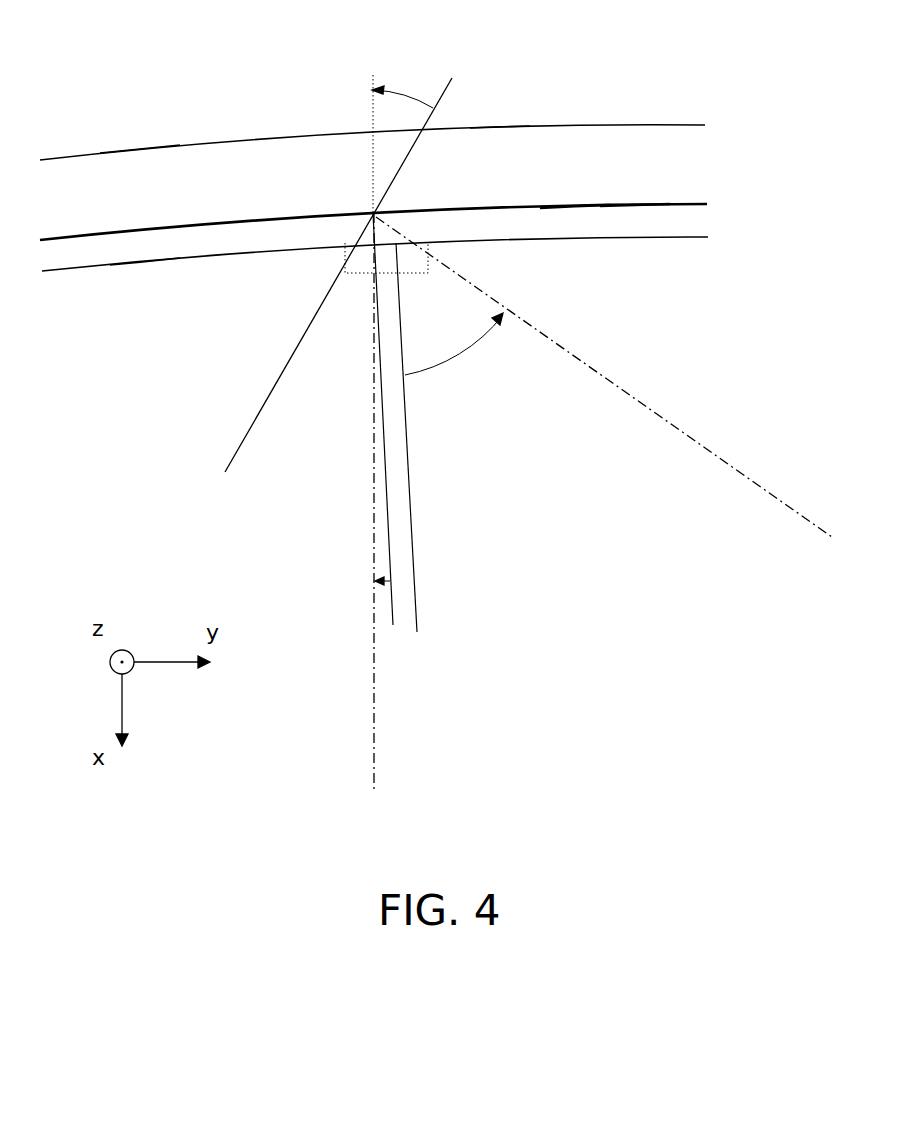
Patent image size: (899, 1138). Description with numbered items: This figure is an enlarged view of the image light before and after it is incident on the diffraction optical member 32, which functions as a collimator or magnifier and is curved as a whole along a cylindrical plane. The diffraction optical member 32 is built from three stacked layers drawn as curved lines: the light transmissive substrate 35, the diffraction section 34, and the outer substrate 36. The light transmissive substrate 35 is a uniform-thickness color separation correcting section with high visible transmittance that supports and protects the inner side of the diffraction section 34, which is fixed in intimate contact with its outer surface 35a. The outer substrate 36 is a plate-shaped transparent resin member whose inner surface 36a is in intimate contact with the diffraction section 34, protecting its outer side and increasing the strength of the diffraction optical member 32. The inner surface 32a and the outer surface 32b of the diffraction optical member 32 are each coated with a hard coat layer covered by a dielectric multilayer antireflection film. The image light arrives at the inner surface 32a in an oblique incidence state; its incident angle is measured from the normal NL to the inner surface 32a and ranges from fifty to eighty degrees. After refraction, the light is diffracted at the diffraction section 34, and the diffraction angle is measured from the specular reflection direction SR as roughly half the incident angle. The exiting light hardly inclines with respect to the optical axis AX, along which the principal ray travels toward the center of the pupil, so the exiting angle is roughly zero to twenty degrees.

The diffraction optical member 32 is at (433, 183).
The inner surface 32a is at (143, 265).
The outer surface 32b is at (127, 148).
The diffraction section 34 is at (708, 204).
The light transmissive substrate 35 is at (688, 220).
The outer surface of light transmissive substrate 35a is at (495, 130).
The outer substrate 36 is at (685, 163).
The inner surface of outer substrate 36a is at (632, 212).
The specular reflection direction SR is at (282, 373).
The normal NL is at (385, 448).
The optical axis AX is at (630, 400).